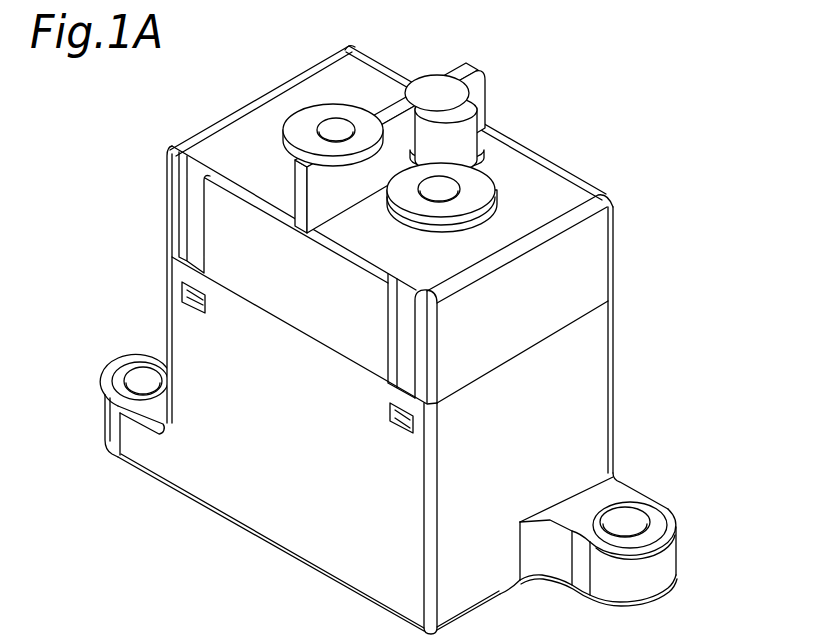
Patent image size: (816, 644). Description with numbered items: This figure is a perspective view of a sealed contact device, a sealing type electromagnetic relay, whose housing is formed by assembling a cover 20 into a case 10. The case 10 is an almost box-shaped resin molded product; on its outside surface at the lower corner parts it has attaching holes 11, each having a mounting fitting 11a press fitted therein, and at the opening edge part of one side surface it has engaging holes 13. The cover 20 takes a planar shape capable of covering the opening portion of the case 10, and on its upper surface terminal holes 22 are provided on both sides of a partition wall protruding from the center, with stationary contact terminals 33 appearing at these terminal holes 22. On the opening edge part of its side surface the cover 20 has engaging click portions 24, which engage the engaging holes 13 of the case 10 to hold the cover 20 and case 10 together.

The case 10 is at (283, 517).
The attaching hole 11 is at (152, 374).
The mounting fitting 11a is at (628, 520).
The engaging hole 13 is at (196, 312).
The cover 20 is at (560, 198).
The terminal hole 22 is at (287, 140).
The engaging click portion 24 is at (205, 300).
The stationary contact terminal 33 is at (357, 117).